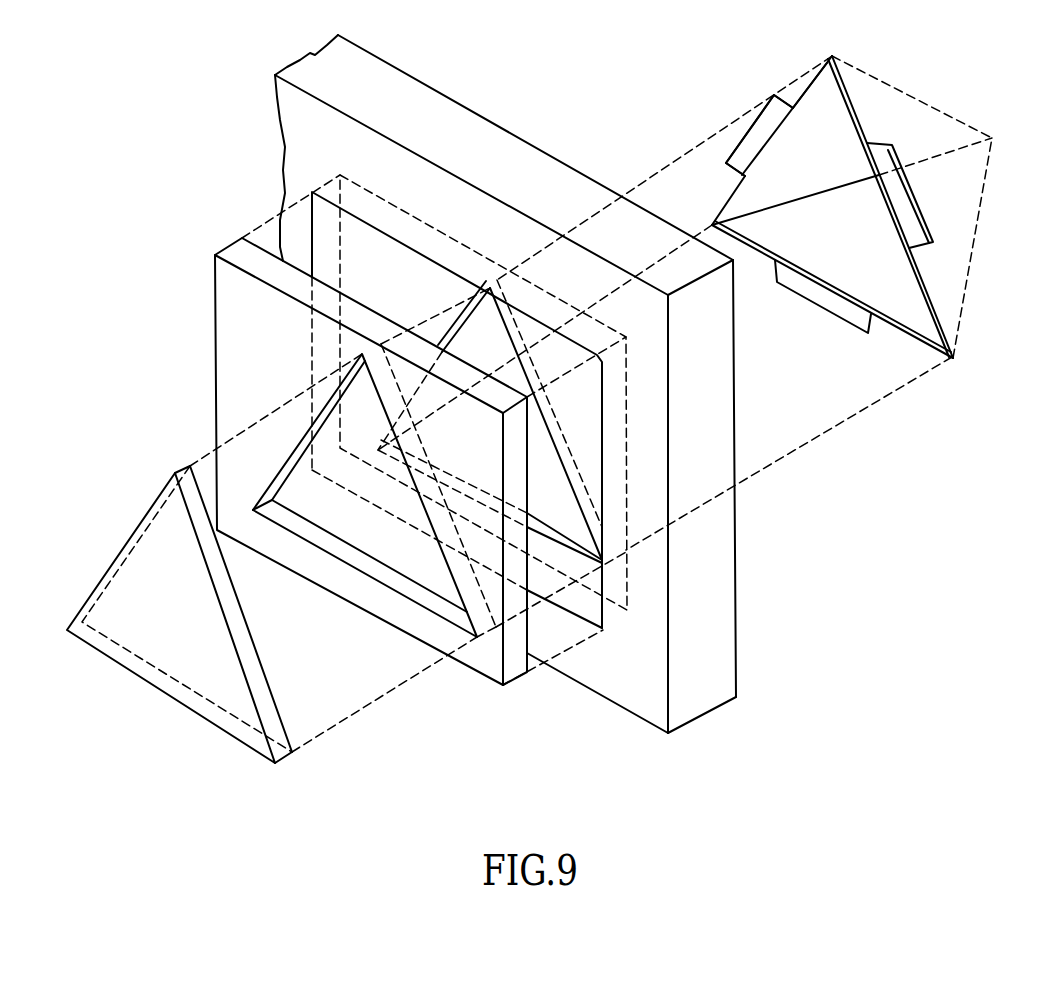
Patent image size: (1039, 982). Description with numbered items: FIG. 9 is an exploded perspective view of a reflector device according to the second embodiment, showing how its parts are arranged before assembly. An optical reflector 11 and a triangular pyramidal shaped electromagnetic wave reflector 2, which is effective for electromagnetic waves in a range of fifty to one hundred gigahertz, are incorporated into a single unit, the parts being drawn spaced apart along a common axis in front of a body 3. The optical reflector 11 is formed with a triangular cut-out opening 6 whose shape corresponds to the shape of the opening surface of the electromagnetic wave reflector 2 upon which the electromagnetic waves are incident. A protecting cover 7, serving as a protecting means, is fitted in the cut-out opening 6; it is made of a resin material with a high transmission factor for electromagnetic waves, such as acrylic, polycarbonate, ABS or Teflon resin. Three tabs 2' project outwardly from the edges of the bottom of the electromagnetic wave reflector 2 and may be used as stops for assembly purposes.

The electromagnetic wave reflector 2 is at (702, 309).
The tabs 2' is at (816, 238).
The block / housing 3 is at (452, 99).
The triangular cut-out opening 6 is at (435, 615).
The protecting cover 7 is at (85, 600).
The optical reflector 11 is at (235, 315).